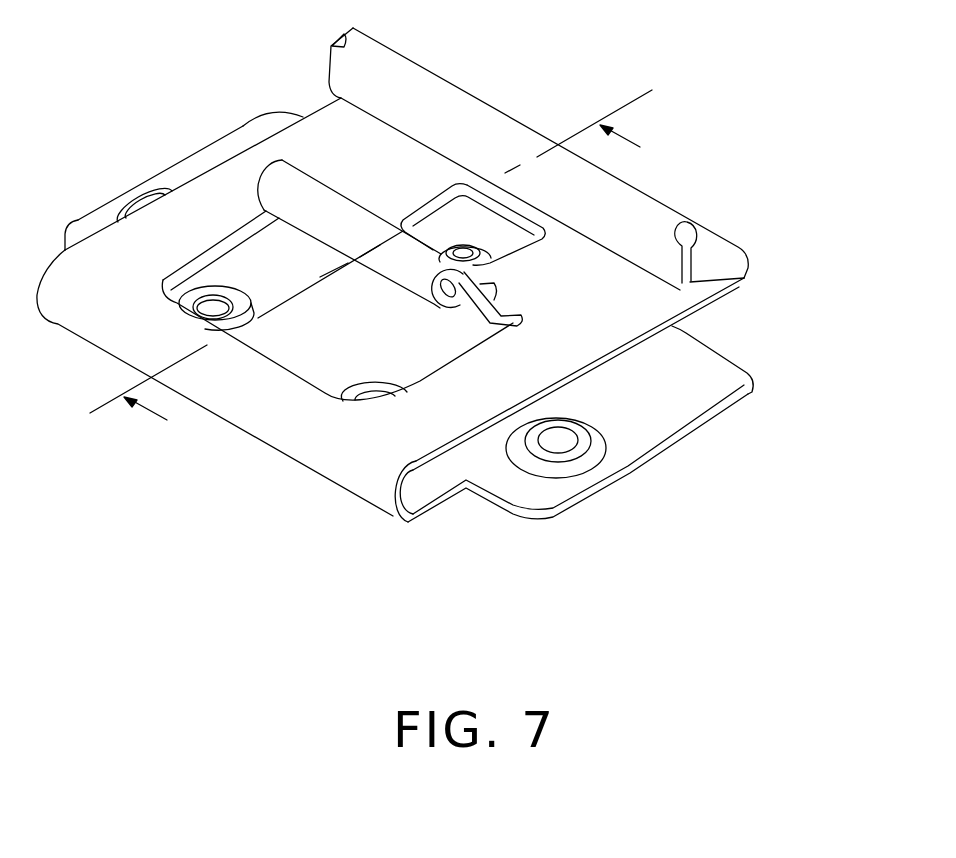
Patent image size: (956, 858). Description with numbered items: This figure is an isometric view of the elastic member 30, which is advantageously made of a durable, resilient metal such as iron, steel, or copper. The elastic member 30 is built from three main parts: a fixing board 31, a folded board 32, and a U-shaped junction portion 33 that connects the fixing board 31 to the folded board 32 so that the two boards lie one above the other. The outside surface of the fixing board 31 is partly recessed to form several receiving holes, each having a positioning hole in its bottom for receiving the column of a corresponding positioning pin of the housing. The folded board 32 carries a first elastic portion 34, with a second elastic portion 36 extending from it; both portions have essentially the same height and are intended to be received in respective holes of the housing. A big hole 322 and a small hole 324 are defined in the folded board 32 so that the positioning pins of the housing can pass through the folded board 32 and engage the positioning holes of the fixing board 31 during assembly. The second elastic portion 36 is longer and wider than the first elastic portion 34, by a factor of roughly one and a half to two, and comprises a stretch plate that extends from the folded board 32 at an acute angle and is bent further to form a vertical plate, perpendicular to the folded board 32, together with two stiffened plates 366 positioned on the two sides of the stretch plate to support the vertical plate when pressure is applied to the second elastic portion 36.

The elastic member 30 is at (668, 186).
The fixing board 31 is at (623, 423).
The folded board 32 is at (607, 282).
The U-shaped junction portion 33 is at (377, 480).
The first elastic portion 34 is at (280, 188).
The second elastic portion 36 is at (398, 92).
The big hole 322 is at (337, 337).
The small hole 324 is at (460, 190).
The stiffened plates 366 is at (707, 260).